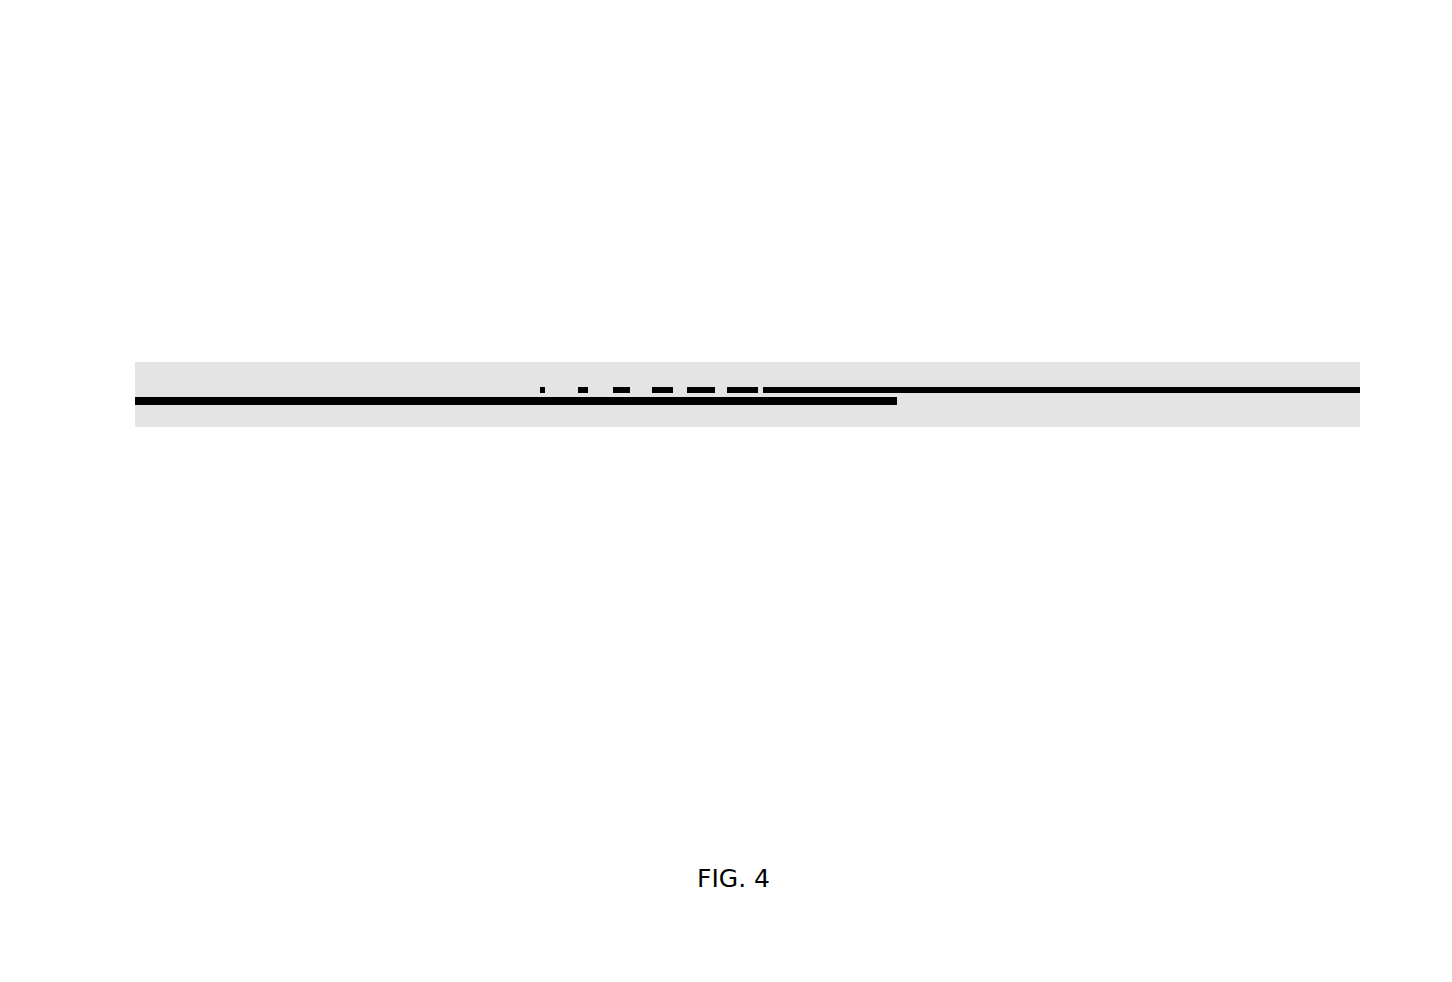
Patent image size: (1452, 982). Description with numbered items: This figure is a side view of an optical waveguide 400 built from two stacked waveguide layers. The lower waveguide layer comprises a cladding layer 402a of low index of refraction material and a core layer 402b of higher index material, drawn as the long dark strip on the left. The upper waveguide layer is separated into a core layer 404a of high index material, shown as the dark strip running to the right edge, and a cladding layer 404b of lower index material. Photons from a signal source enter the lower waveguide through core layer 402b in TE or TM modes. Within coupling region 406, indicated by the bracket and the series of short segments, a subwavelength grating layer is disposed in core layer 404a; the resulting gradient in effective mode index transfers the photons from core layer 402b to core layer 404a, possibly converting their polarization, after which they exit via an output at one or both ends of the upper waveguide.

The optical waveguide 400 is at (1217, 118).
The cladding layer 402a is at (1175, 428).
The core layer 402b is at (135, 403).
The core layer 404a is at (1360, 390).
The cladding layer 404b is at (272, 362).
The coupling region 406 is at (796, 336).